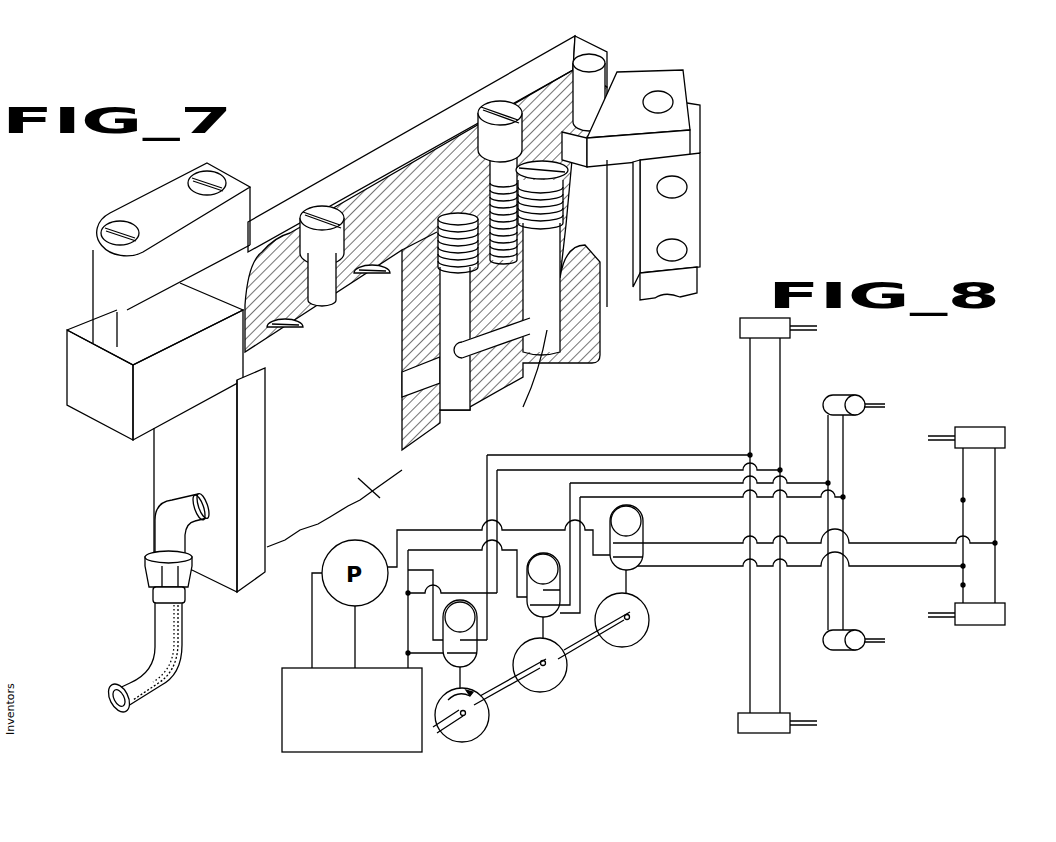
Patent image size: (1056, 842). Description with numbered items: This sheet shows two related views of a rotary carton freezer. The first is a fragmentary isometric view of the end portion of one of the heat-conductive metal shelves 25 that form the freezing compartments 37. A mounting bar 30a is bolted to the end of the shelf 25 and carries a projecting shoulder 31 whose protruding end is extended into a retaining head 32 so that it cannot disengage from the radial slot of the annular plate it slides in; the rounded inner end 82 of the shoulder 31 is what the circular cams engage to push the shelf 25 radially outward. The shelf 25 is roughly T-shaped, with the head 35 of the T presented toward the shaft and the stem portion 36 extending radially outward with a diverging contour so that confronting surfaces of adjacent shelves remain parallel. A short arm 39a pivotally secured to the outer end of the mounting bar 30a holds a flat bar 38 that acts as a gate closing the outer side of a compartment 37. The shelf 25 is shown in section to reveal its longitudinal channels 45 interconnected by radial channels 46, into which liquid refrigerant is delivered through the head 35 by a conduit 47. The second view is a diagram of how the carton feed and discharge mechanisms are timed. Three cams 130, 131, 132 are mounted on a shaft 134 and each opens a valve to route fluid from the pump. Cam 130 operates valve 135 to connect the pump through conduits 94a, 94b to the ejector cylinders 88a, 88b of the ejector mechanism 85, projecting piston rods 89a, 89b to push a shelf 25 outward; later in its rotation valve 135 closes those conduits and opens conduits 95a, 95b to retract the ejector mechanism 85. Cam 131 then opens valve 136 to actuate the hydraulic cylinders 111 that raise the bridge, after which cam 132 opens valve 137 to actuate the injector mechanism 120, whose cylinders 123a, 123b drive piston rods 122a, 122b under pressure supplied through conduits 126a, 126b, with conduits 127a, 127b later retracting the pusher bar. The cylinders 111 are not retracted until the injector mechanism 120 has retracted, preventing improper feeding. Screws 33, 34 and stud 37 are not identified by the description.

In FIG. 7, the shelf 25 is at (380, 497).
In FIG. 7, the bar 30a is at (427, 132).
In FIG. 7, the projecting shoulder 31 is at (130, 323).
In FIG. 7, the retaining head 32 is at (240, 202).
In FIG. 7, the threaded screw 33 is at (500, 182).
In FIG. 7, the threaded screw 34 is at (542, 258).
In FIG. 7, the head 35 is at (207, 460).
In FIG. 7, the stem portion 36 is at (372, 422).
In FIG. 7, the freezing compartment 37 is at (458, 311).
In FIG. 7, the flat bar 38 is at (683, 297).
In FIG. 7, the short arm 39a is at (688, 207).
In FIG. 7, the longitudinal channel 45 is at (452, 395).
In FIG. 7, the radial channel 46 is at (498, 338).
In FIG. 7, the conduit 47 is at (167, 632).
In FIG. 7, the rounded inner end 82 is at (108, 275).
In FIG. 8, the ejector mechanism 85 is at (732, 426).
In FIG. 8, the hydraulic cylinder 88a is at (753, 723).
In FIG. 8, the hydraulic cylinder 88b is at (743, 331).
In FIG. 8, the piston rod 89a is at (805, 720).
In FIG. 8, the piston rod 89b is at (803, 331).
In FIG. 8, the conduit 94a is at (750, 661).
In FIG. 8, the conduit 94b is at (750, 396).
In FIG. 8, the conduit 95a is at (780, 636).
In FIG. 8, the conduit 95b is at (780, 417).
In FIG. 8, the hydraulic cylinder 111 is at (840, 405).
In FIG. 8, the injector mechanism 120 is at (954, 420).
In FIG. 8, the piston rod 122a is at (943, 615).
In FIG. 8, the piston rod 122b is at (938, 441).
In FIG. 8, the hydraulic cylinder 123a is at (968, 619).
In FIG. 8, the hydraulic cylinder 123b is at (982, 428).
In FIG. 8, the conduit 126a is at (996, 601).
In FIG. 8, the conduit 126b is at (996, 490).
In FIG. 8, the conduit 127a is at (963, 585).
In FIG. 8, the conduit 127b is at (963, 500).
In FIG. 8, the cam 130 is at (473, 728).
In FIG. 8, the cam 131 is at (547, 694).
In FIG. 8, the cam 132 is at (640, 614).
In FIG. 8, the shaft 134 is at (567, 652).
In FIG. 8, the valve 135 is at (443, 635).
In FIG. 8, the valve 136 is at (545, 565).
In FIG. 8, the valve 137 is at (632, 519).